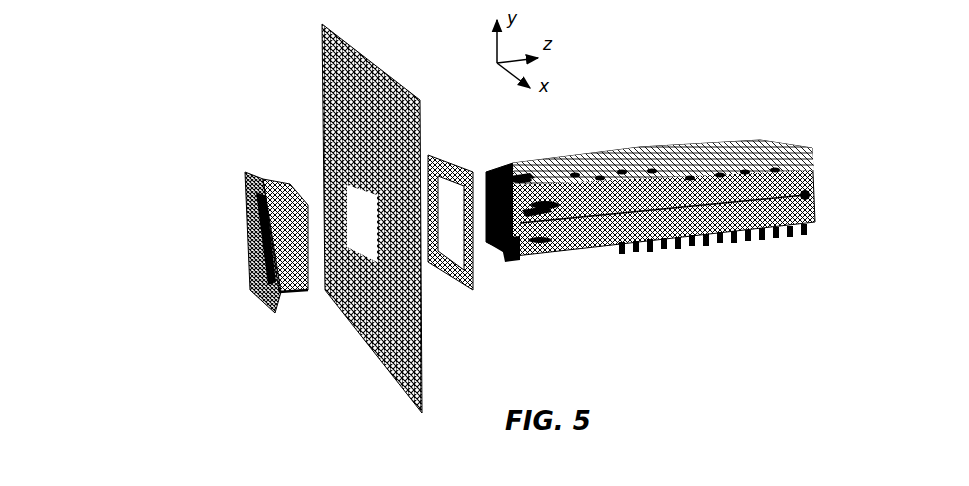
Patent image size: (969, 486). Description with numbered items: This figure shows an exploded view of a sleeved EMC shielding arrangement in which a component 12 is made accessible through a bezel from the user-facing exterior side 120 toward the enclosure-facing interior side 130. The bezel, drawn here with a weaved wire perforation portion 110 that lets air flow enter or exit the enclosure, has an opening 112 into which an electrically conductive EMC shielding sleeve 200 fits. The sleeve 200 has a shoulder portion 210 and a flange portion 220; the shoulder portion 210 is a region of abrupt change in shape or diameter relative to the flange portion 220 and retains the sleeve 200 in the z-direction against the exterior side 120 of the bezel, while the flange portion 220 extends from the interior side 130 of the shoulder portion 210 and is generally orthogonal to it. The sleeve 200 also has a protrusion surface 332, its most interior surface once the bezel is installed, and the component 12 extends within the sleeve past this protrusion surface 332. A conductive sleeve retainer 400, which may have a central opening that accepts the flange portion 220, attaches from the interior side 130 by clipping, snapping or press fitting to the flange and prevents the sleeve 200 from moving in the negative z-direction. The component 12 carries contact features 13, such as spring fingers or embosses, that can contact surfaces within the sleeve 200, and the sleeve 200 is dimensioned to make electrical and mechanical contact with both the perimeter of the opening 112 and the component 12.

The perforation portion 110 is at (323, 88).
The opening 112 is at (360, 250).
The exterior side 120 is at (163, 398).
The interior side 130 is at (650, 175).
The contact features 13 is at (523, 178).
The component 12 is at (650, 222).
The EMC shielding sleeve 200 is at (242, 270).
The shoulder portion 210 is at (243, 183).
The flange portion 220 is at (288, 281).
The protrusion surface 332 is at (305, 196).
The sleeve retainer 400 is at (438, 152).